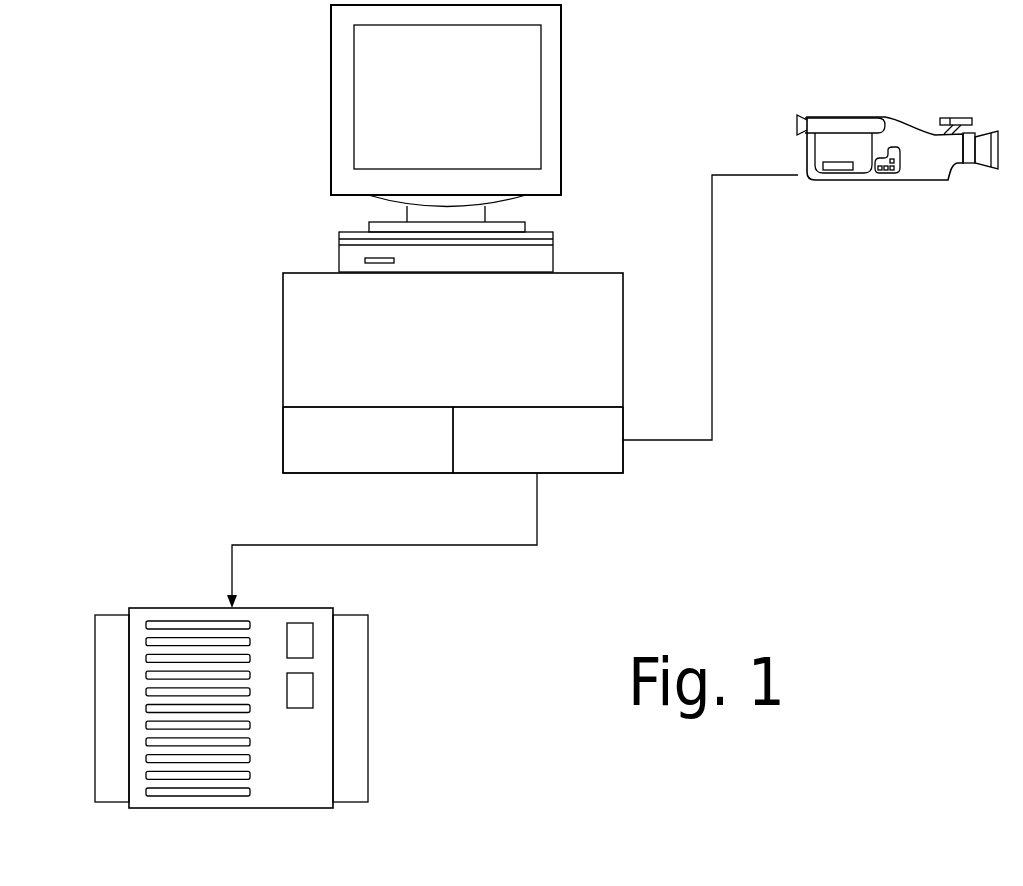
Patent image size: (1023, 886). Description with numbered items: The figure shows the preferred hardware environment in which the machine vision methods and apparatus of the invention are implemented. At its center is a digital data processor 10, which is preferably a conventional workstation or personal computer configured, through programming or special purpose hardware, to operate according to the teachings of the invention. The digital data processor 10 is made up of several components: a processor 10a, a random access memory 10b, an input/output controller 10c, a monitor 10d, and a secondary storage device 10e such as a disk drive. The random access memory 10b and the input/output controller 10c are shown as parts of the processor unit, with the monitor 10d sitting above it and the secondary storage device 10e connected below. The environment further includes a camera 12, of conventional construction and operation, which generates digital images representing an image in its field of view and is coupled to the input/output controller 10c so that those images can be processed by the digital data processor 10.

The digital data processor 10 is at (219, 91).
The processor 10a is at (602, 285).
The random access memory 10b is at (290, 462).
The input/output controller 10c is at (617, 466).
The monitor 10d is at (555, 127).
The secondary storage device 10e is at (144, 800).
The camera 12 is at (823, 131).